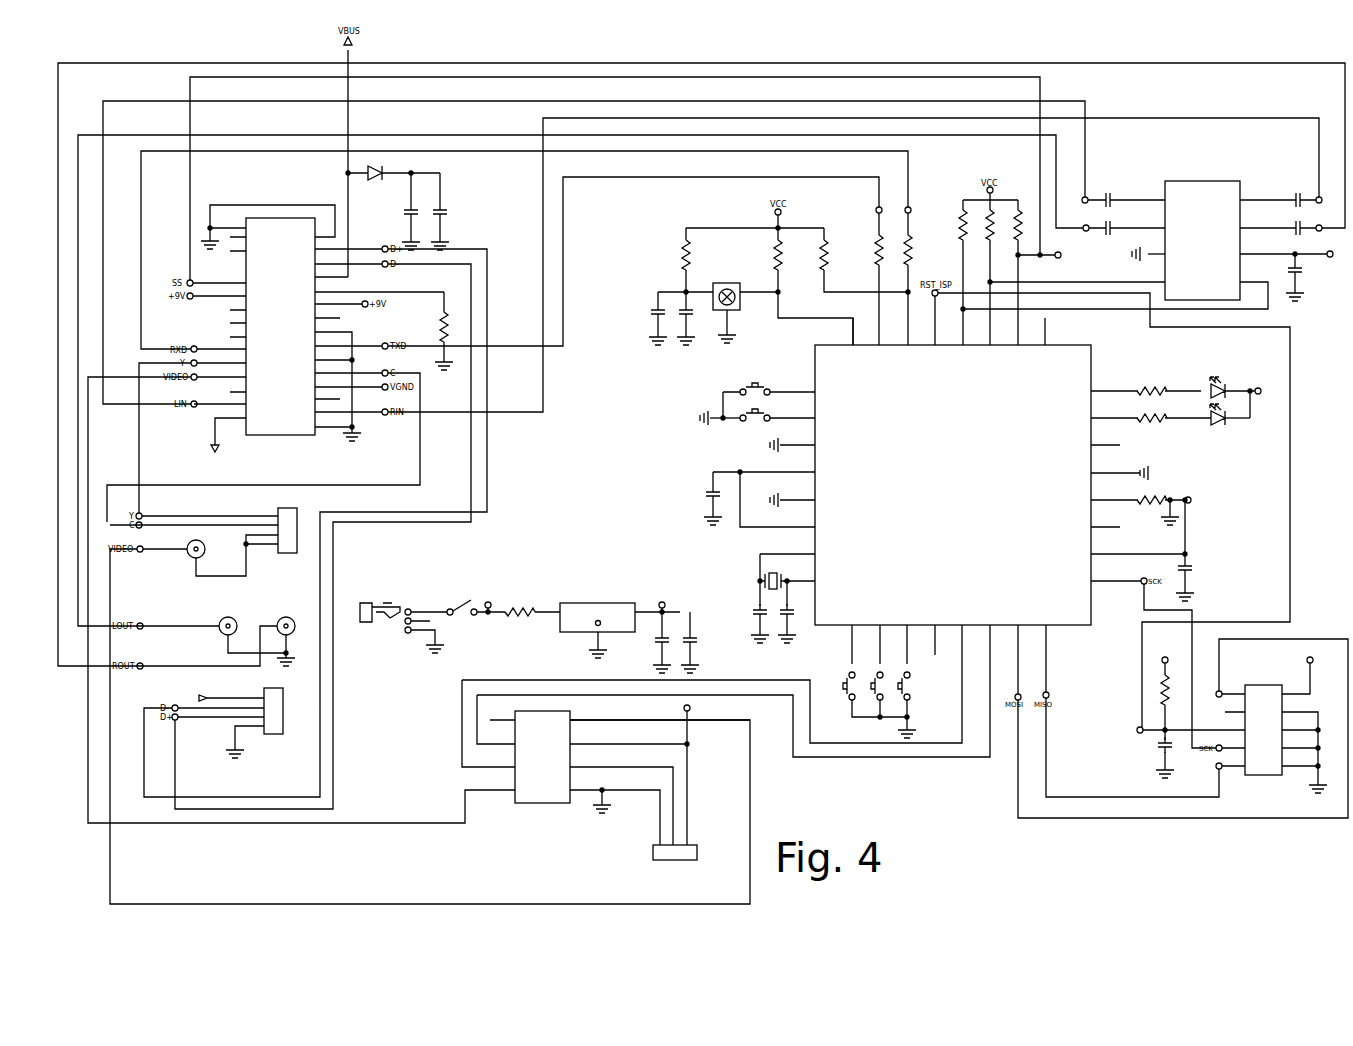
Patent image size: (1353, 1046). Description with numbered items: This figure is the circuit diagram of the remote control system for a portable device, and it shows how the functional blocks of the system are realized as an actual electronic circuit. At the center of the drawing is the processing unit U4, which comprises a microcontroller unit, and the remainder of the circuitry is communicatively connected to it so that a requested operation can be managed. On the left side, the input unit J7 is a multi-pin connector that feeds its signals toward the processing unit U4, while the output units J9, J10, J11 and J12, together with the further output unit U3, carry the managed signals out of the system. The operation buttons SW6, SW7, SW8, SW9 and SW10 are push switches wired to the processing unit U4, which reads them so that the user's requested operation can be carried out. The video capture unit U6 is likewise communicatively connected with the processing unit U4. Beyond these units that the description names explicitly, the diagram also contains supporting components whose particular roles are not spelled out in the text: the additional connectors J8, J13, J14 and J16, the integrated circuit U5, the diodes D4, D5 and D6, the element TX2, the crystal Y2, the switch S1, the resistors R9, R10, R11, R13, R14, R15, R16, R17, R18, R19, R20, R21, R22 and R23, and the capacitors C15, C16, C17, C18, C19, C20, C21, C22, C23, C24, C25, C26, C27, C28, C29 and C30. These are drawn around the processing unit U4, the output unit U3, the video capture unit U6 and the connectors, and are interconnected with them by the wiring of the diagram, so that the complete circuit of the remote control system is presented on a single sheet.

The input unit J7 is at (318, 335).
The video RCA connector J8 is at (177, 545).
The output unit J9 is at (257, 635).
The output unit J10 is at (230, 718).
The output unit J11 is at (250, 537).
The output unit J12 is at (290, 620).
The ISP programming connector J13 is at (1261, 721).
The DC jack J14 is at (403, 621).
The video camera connector J16 is at (663, 867).
The output unit U3 is at (1241, 241).
The processing unit U4 is at (949, 499).
The L4941 voltage regulator U5 is at (612, 621).
The video capture unit U6 is at (620, 771).
The diode D4 is at (393, 167).
The LED D5 is at (1222, 422).
The LED D6 is at (1231, 392).
The TOPS18 infrared transmitter TX2 is at (732, 303).
The crystal Y2 is at (773, 582).
The power switch S1 is at (473, 608).
The operation button SW6 is at (746, 398).
The operation button SW7 is at (735, 416).
The operation button SW8 is at (874, 689).
The operation button SW9 is at (878, 690).
The operation button SW10 is at (906, 699).
The resistor R9 is at (691, 260).
The resistor R10 is at (786, 249).
The resistor R11 is at (864, 260).
The resistor R13 is at (885, 258).
The resistor R14 is at (915, 258).
The resistor R15 is at (1113, 259).
The resistor R16 is at (1075, 259).
The resistor R17 is at (1043, 259).
The resistor R18 is at (451, 331).
The resistor R19 is at (1169, 391).
The resistor R20 is at (1174, 418).
The resistor R21 is at (1172, 507).
The resistor R22 is at (1147, 694).
The resistor R23 is at (530, 610).
The capacitor C15 is at (418, 210).
The capacitor C16 is at (447, 211).
The capacitor C17 is at (1115, 201).
The capacitor C18 is at (1112, 229).
The capacitor C19 is at (1288, 201).
The capacitor C20 is at (1293, 229).
The capacitor C21 is at (1302, 277).
The capacitor C22 is at (663, 318).
The capacitor C23 is at (692, 317).
The capacitor C24 is at (720, 498).
The capacitor C25 is at (753, 623).
The capacitor C26 is at (792, 623).
The capacitor C27 is at (1191, 550).
The capacitor C28 is at (667, 642).
The capacitor C29 is at (695, 642).
The capacitor C30 is at (1171, 757).